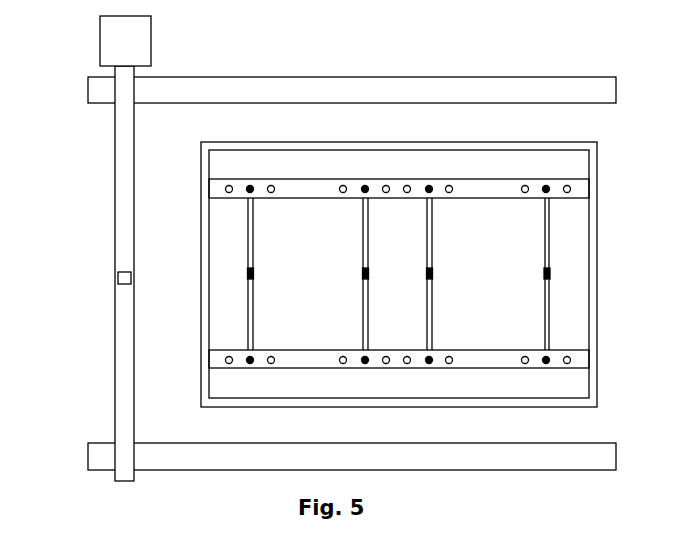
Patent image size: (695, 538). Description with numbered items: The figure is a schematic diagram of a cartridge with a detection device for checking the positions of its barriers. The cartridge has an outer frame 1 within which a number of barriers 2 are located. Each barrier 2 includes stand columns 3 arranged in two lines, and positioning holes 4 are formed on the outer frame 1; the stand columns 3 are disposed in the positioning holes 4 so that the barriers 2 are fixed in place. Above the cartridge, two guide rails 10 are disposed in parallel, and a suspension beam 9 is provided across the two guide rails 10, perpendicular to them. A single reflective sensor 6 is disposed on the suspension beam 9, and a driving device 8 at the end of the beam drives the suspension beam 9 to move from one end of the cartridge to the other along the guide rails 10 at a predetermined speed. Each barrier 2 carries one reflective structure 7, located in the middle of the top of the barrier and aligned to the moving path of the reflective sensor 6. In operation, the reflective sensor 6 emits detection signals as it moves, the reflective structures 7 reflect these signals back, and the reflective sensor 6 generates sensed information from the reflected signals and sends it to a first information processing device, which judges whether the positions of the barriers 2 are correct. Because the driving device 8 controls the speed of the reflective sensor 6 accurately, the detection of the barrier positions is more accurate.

The outer frame 1 is at (375, 274).
The barriers 2 is at (398, 274).
The stand columns 3 is at (380, 236).
The positioning holes 4 is at (398, 236).
The reflective sensor 6 is at (100, 253).
The reflective structures 7 is at (399, 249).
The driving device 8 is at (160, 34).
The suspension beam 9 is at (103, 273).
The guide rails 10 is at (324, 251).